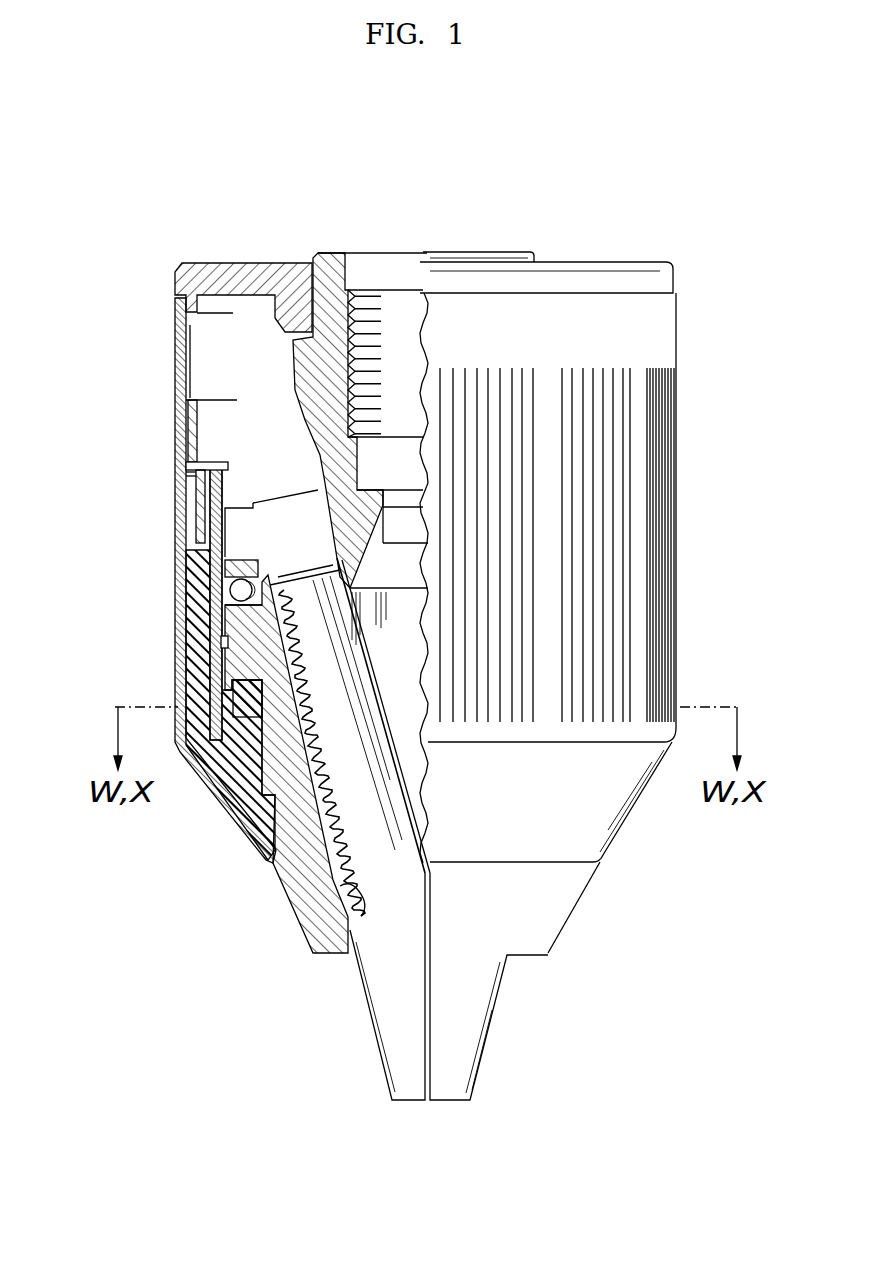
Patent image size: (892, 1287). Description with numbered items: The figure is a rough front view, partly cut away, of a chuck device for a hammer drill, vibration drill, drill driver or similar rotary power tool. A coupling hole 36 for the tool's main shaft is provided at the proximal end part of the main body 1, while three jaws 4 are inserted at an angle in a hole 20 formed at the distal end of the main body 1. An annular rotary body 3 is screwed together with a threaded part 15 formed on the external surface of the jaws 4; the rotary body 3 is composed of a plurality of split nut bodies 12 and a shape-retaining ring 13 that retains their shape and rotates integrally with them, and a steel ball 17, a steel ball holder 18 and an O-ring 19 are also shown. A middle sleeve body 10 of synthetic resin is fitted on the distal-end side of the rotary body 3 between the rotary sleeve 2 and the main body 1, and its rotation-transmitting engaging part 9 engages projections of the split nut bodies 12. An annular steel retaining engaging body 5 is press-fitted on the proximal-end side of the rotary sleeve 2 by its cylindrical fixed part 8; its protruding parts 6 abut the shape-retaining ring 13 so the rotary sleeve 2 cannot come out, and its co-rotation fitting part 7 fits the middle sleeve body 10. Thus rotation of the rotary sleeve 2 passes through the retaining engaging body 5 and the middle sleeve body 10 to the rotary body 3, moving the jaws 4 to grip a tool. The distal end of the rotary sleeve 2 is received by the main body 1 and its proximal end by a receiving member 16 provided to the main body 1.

The main body 1 is at (303, 898).
The rotary sleeve 2 is at (175, 348).
The rotary body 3 is at (283, 608).
The jaws 4 is at (380, 1062).
The retaining engaging body 5 is at (192, 470).
The protruding parts 6 is at (226, 466).
The co-rotation fitting part 7 is at (194, 492).
The cylindrical fixed part 8 is at (200, 415).
The rotation-transmitting engaging part 9 is at (265, 703).
The middle sleeve body 10 is at (227, 785).
The split nut bodies 12 is at (237, 657).
The shape-retaining ring 13 is at (230, 498).
The threaded part 15 is at (280, 618).
The receiving member 16 is at (250, 270).
The steel ball 17 is at (253, 587).
The steel ball holder 18 is at (247, 563).
The O-ring 19 is at (223, 642).
The hole 20 is at (345, 888).
The coupling hole 36 is at (370, 322).